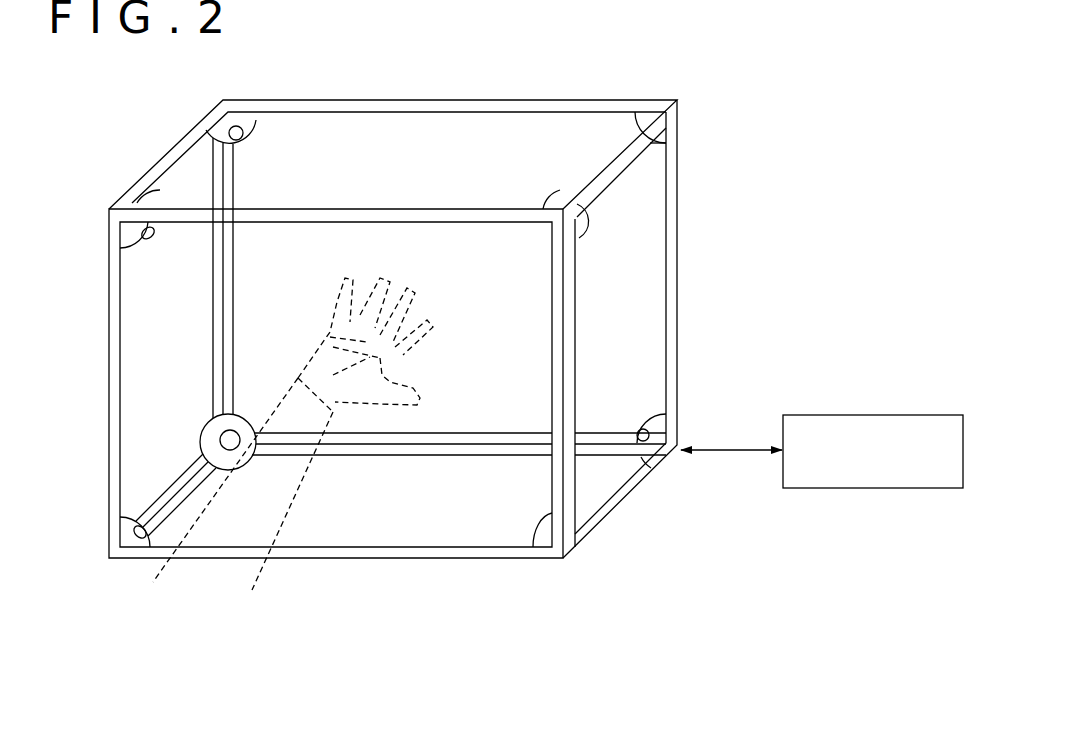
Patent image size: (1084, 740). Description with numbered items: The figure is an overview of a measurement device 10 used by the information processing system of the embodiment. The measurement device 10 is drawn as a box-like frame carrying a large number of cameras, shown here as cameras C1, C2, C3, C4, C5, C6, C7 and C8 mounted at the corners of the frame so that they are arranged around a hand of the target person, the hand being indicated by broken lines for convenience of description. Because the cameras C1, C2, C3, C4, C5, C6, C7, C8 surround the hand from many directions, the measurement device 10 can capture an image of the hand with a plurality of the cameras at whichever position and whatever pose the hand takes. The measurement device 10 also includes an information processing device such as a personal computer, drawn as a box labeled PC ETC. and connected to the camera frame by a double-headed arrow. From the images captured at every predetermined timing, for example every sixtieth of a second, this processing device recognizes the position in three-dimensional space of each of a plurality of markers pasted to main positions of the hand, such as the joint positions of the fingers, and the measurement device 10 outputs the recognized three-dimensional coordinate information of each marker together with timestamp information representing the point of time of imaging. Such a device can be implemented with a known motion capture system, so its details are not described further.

The measurement device 10 is at (680, 583).
The camera C1 is at (653, 152).
The camera C2 is at (645, 398).
The camera C3 is at (530, 520).
The camera C4 is at (597, 222).
The camera C5 is at (264, 133).
The camera C6 is at (203, 413).
The camera C7 is at (138, 500).
The camera C8 is at (140, 256).